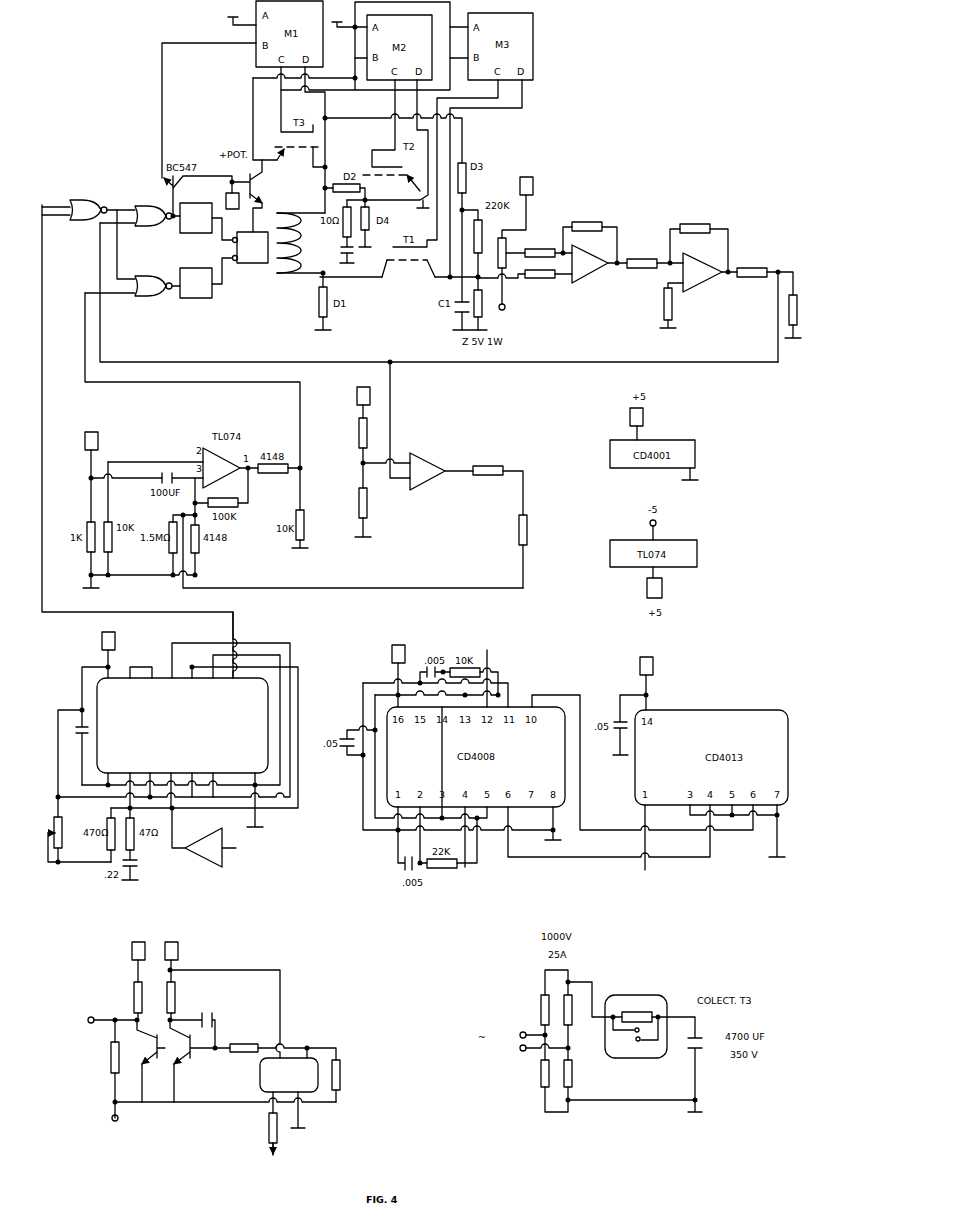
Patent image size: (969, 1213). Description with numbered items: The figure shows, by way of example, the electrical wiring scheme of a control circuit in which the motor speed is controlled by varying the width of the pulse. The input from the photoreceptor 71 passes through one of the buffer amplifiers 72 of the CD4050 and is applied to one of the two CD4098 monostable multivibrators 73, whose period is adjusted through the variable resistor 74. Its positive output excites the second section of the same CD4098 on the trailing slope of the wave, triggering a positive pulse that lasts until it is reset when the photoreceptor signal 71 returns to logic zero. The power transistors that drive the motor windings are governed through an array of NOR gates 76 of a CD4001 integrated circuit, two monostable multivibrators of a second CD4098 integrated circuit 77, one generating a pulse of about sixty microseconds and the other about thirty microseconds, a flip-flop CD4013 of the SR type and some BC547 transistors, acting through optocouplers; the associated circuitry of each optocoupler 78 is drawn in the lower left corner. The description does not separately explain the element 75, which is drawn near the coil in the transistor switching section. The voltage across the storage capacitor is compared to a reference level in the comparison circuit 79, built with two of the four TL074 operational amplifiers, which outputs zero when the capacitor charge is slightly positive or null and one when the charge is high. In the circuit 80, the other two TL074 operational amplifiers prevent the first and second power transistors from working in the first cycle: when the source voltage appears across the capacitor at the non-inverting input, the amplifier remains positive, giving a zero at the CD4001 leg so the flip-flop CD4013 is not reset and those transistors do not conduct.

The input from the photoreceptor 71 is at (231, 851).
The buffer amplifier 72 is at (182, 852).
The monostable multivibrator 73 is at (152, 677).
The variable resistor 74 is at (48, 844).
The coil 0.22UF tank circuit 75 is at (298, 278).
The array of NOR gates 76 is at (83, 153).
The second CD4098 integrated circuit 77 is at (194, 263).
The associated circuitry of the optocoupler 78 is at (307, 957).
The comparison circuit 79 is at (633, 174).
The circuit of the other two TL074 operational amplifiers 80 is at (428, 424).